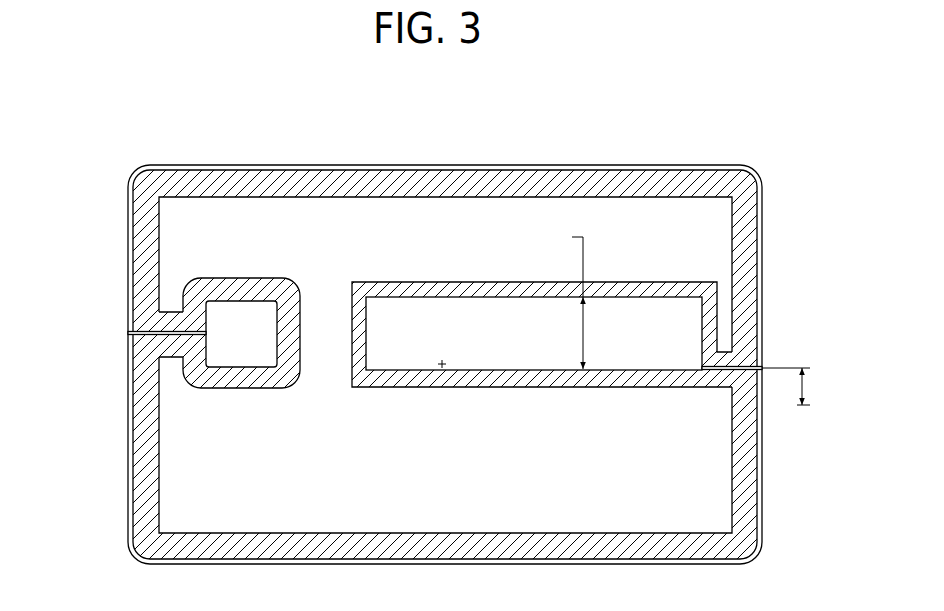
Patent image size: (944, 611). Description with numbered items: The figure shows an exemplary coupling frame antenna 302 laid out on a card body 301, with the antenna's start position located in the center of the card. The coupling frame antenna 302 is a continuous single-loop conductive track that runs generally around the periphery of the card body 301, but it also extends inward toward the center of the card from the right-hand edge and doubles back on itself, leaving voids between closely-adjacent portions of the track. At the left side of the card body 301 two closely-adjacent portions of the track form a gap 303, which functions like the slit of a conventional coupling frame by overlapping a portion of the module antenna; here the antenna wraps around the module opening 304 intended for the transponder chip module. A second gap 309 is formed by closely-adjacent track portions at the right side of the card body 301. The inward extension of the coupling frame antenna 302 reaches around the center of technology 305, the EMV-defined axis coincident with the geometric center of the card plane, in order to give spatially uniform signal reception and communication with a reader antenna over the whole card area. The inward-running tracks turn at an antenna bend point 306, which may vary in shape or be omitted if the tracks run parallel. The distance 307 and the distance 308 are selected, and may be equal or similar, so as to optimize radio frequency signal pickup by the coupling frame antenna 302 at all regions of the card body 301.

The card body 301 is at (501, 210).
The coupling frame antenna 302 is at (272, 187).
The gap 303 is at (148, 337).
The module opening 304 is at (248, 352).
The center of technology 305 is at (443, 368).
The antenna bend point 306 is at (727, 351).
The distance D 307 is at (559, 295).
The distance E 308 is at (801, 410).
The gap 309 is at (722, 372).